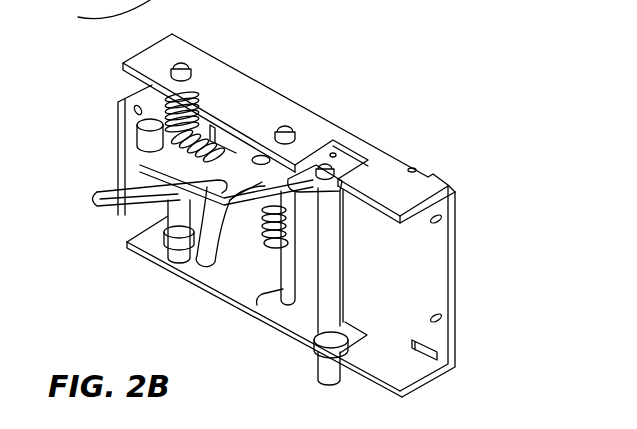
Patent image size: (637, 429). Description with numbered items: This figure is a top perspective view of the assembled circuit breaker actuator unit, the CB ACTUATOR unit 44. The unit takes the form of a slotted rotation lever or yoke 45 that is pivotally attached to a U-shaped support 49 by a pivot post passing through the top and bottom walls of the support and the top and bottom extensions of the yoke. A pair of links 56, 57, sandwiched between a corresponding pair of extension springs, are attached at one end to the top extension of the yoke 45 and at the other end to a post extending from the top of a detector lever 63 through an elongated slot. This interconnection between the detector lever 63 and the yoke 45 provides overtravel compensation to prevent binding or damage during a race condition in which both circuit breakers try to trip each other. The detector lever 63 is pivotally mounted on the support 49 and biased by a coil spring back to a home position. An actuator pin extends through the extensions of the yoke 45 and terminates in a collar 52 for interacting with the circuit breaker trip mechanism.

The CB ACTUATOR unit 44 is at (549, 361).
The slotted rotation lever or yoke 45 is at (110, 197).
The U-shaped support 49 is at (455, 239).
The collar 52 is at (317, 363).
The link 56 is at (140, 138).
The link 57 is at (140, 152).
The detector lever 63 is at (237, 270).